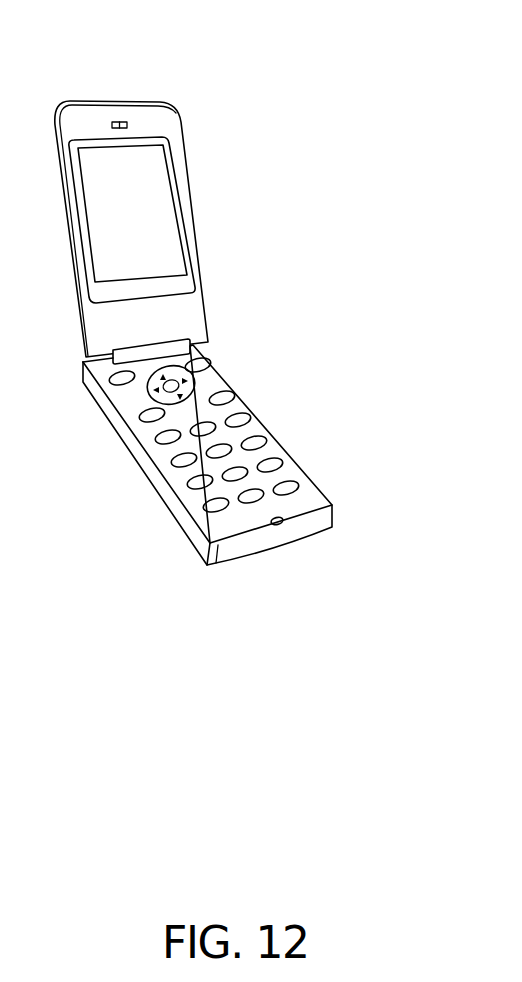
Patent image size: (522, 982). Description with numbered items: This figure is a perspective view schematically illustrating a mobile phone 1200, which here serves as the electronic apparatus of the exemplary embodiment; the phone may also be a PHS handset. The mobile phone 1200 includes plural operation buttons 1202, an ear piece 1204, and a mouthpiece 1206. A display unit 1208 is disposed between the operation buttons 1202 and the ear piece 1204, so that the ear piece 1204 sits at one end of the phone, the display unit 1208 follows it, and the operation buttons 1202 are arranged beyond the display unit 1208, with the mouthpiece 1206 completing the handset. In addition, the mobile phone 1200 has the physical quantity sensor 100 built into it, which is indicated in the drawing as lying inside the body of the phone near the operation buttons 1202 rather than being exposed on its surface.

The mobile phone 1200 is at (216, 65).
The ear piece 1204 is at (122, 121).
The display unit 1208 is at (160, 207).
The physical quantity sensor 100 is at (210, 382).
The operation buttons 1202 is at (241, 419).
The mouthpiece 1206 is at (278, 520).